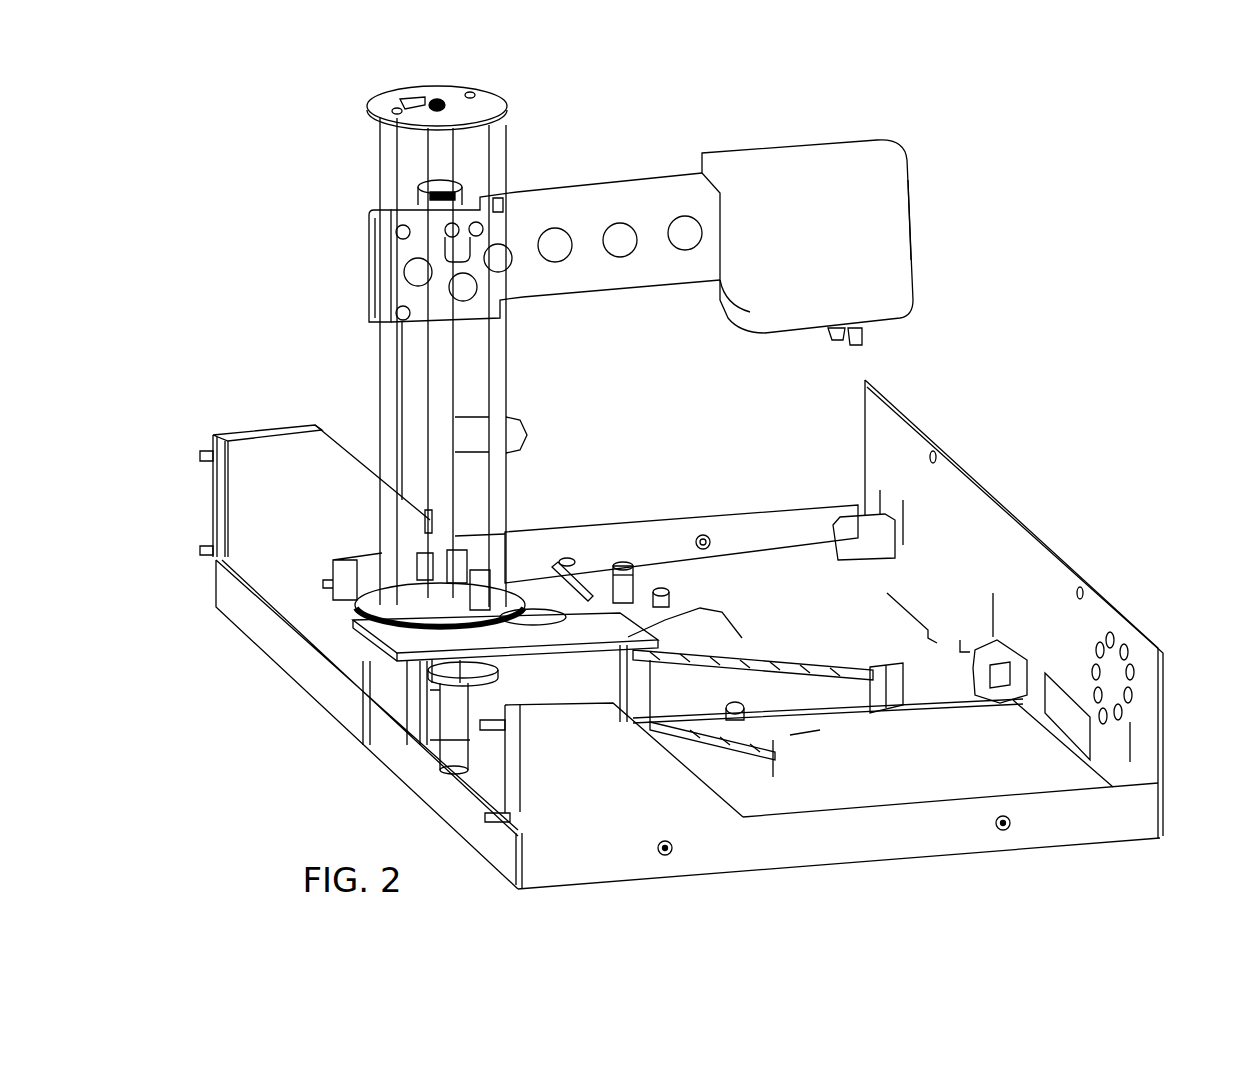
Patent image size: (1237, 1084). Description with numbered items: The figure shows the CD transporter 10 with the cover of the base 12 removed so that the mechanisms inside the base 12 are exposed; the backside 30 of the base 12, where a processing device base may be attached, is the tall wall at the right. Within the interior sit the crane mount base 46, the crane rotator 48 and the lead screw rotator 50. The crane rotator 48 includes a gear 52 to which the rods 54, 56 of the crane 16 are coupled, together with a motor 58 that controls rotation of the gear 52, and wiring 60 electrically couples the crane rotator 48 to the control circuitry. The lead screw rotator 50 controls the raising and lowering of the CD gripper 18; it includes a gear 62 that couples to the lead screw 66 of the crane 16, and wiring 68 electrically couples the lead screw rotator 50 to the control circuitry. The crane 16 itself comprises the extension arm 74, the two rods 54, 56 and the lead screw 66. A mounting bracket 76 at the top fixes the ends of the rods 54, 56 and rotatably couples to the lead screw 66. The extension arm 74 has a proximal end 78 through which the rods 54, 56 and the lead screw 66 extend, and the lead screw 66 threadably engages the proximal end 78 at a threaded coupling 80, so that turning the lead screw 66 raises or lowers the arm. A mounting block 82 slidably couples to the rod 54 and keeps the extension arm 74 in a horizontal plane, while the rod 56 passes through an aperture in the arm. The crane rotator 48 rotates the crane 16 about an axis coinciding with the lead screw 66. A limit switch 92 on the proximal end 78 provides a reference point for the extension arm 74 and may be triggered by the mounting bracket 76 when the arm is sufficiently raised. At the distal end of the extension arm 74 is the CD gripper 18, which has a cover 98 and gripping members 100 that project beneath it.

The CD transporter 10 is at (1022, 250).
The base 12 is at (917, 833).
The crane 16 is at (540, 128).
The CD gripper 18 is at (835, 145).
The backside 30 is at (1170, 750).
The crane mount base 46 is at (598, 635).
The crane rotator 48 is at (518, 582).
The lead screw rotator 50 is at (440, 735).
The gear 52 is at (358, 634).
The rod 54 is at (385, 375).
The rod 56 is at (497, 363).
The motor 58 is at (587, 585).
The wiring 60 is at (775, 660).
The gear 62 is at (437, 690).
The lead screw 66 is at (440, 387).
The wiring 68 is at (735, 745).
The extension arm 74 is at (615, 195).
The mounting bracket 76 is at (445, 95).
The proximal end 78 is at (405, 287).
The threaded coupling 80 is at (425, 190).
The mounting block 82 is at (373, 268).
The limit switch 92 is at (498, 232).
The cover 98 is at (912, 225).
The gripping members 100 is at (878, 345).